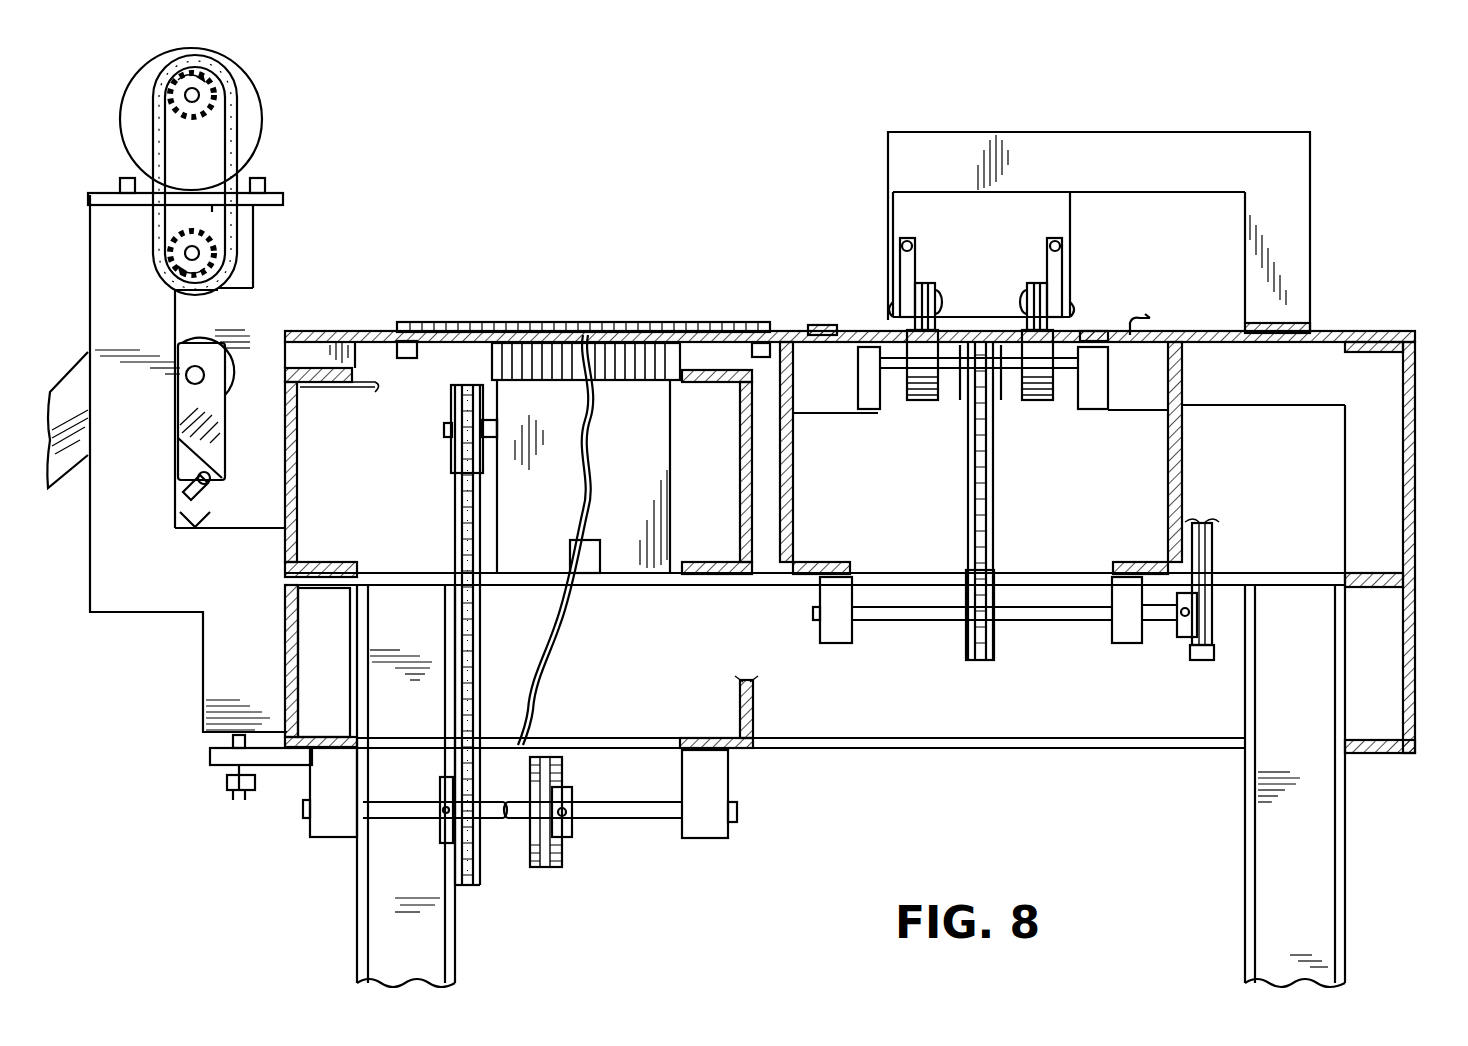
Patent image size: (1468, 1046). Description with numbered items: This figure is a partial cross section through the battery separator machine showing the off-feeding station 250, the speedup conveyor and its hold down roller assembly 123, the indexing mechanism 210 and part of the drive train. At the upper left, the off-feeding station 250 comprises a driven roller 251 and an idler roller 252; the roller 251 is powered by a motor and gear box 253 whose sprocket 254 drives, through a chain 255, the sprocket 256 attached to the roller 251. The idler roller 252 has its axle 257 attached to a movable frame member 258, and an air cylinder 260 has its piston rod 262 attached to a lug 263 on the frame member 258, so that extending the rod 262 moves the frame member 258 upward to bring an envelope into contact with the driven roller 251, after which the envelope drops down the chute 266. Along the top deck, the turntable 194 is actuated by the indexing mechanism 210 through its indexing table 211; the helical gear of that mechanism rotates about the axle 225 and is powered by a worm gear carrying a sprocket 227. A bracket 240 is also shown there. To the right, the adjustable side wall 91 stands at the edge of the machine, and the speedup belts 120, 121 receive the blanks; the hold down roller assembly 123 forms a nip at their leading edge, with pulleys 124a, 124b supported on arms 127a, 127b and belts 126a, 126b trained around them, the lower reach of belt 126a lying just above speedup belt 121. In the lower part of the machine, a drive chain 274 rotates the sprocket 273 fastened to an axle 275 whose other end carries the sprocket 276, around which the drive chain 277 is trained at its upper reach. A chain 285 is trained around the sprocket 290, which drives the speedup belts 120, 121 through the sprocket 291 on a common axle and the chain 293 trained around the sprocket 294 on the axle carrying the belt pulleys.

The adjustable side wall 91 is at (1138, 322).
The speedup belt 120 is at (1020, 402).
The speedup belt 121 is at (916, 403).
The hold down roller assembly 123 is at (880, 268).
The pulley 124a is at (936, 302).
The pulley 124b is at (1026, 318).
The belt 126a is at (924, 292).
The belt 126b is at (1038, 279).
The arm 127a is at (908, 262).
The arm 127b is at (1050, 238).
The turntable 194 is at (606, 328).
The indexing mechanism 210 is at (606, 406).
The indexing table 211 is at (494, 364).
The axle 225 is at (445, 429).
The sprocket 227 is at (452, 458).
The bracket 240 is at (406, 358).
The off-feeding station 250 is at (244, 179).
The driven roller 251 is at (207, 290).
The idler roller 252 is at (228, 395).
The gear box 253 is at (255, 108).
The sprocket 254 is at (178, 80).
The chain 255 is at (155, 152).
The sprocket 256 is at (212, 257).
The axle 257 is at (200, 374).
The movable frame member 258 is at (218, 437).
The air cylinder 260 is at (200, 519).
The piston rod 262 is at (196, 493).
The lug 263 is at (210, 479).
The chute 266 is at (75, 377).
The sprocket 273 is at (558, 788).
The drive chain 274 is at (556, 864).
The axle 275 is at (638, 818).
The sprocket 276 is at (480, 886).
The drive chain 277 is at (455, 537).
The chain 285 is at (1212, 548).
The sprocket 290 is at (1196, 624).
The sprocket 291 is at (994, 657).
The chain 293 is at (994, 487).
The sprocket 294 is at (965, 388).